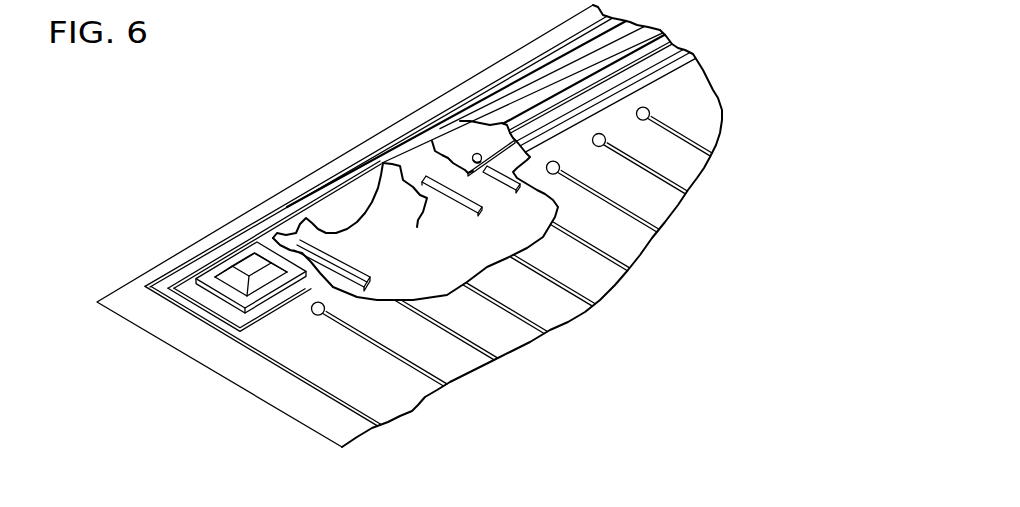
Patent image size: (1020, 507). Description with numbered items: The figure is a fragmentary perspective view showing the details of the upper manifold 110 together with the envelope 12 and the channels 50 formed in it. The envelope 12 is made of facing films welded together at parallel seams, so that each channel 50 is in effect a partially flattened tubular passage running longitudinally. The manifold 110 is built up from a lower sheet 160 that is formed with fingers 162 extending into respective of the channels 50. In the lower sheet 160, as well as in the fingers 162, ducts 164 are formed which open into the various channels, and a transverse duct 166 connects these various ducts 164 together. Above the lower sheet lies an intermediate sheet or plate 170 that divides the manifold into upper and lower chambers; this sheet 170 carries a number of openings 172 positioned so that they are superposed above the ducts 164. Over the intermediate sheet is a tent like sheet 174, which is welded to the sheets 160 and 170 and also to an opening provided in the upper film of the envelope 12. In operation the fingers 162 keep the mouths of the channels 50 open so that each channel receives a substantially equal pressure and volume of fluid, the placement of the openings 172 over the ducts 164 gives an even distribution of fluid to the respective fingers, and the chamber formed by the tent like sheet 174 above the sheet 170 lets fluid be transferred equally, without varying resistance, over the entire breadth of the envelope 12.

The envelope 12 is at (297, 432).
The channels 50 is at (400, 400).
The upper manifold 110 is at (217, 256).
The lower sheet 160 is at (424, 212).
The fingers 162 is at (367, 263).
The ducts 164 is at (323, 237).
The transverse duct 166 is at (306, 228).
The intermediate sheet 170 is at (474, 153).
The openings 172 is at (445, 132).
The tent like sheet 174 is at (543, 95).